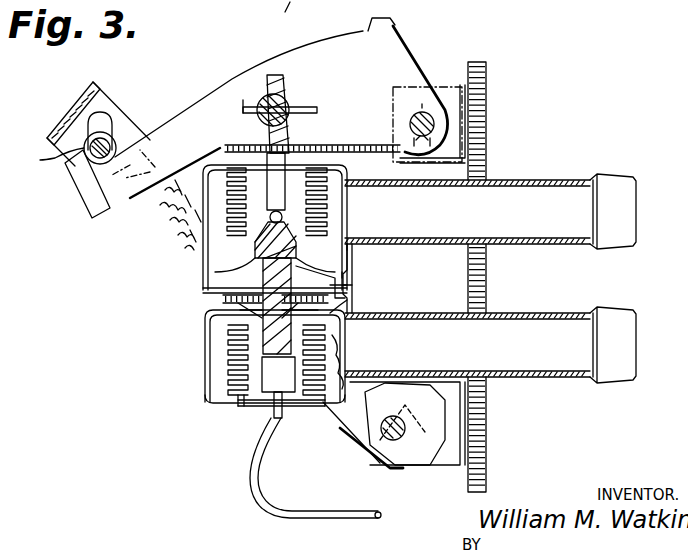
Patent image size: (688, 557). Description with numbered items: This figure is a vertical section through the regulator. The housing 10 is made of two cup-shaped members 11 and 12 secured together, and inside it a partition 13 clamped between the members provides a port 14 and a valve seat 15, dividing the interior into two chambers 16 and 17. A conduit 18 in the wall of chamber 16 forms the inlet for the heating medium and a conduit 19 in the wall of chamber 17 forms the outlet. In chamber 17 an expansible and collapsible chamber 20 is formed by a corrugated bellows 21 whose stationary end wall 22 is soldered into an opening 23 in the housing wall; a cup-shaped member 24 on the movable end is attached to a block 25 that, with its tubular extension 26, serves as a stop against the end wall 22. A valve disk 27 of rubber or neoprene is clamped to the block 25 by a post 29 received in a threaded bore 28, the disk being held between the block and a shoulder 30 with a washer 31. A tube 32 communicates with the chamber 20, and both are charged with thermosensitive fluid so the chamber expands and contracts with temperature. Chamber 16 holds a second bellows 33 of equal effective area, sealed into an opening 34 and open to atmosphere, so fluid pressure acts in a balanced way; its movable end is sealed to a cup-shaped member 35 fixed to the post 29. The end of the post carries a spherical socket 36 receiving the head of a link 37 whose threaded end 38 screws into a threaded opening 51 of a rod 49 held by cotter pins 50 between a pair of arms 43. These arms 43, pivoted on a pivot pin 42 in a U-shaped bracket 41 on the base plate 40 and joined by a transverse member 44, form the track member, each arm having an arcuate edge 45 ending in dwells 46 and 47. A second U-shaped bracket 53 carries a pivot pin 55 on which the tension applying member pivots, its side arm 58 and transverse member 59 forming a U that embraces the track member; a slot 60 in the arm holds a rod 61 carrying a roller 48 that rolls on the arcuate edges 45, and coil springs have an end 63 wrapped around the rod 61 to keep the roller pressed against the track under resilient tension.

The housing 10 is at (355, 282).
The cup-shaped member 11 is at (205, 288).
The cup-shaped member 12 is at (228, 358).
The partition 13 is at (212, 305).
The port 14 is at (312, 282).
The valve seat 15 is at (355, 297).
The chamber 16 is at (335, 208).
The chamber 17 is at (335, 365).
The conduit 18 is at (530, 180).
The conduit 19 is at (533, 377).
The expansible and collapsible chamber 20 is at (300, 406).
The bellows 21 is at (232, 406).
The stationary end wall 22 is at (275, 412).
The opening 23 is at (335, 440).
The cup-shaped member 24 is at (240, 312).
The block 25 is at (350, 322).
The tubular extension 26 is at (212, 393).
The valve disk 27 is at (233, 305).
The threaded bore 28 is at (278, 374).
The post 29 is at (262, 292).
The shoulder 30 is at (277, 306).
The washer 31 is at (345, 280).
The tube 32 is at (268, 508).
The bellows 33 is at (345, 228).
The opening 34 is at (325, 148).
The cup-shaped member 35 is at (195, 235).
The spherical socket 36 is at (275, 249).
The link 37 is at (285, 170).
The threaded end 38 is at (287, 95).
The base plate 40 is at (486, 285).
The U-shaped bracket 41 is at (438, 88).
The pivot pin 42 is at (432, 118).
The arm 43 is at (200, 98).
The transverse member 44 is at (372, 145).
The arcuate edge 45 is at (290, 58).
The dwell 46 is at (85, 185).
The dwell 47 is at (396, 24).
The roller 48 is at (110, 140).
The rod 49 is at (289, 112).
The cotter pin 50 is at (246, 108).
The threaded opening 51 is at (250, 115).
The U-shaped bracket 53 is at (447, 465).
The pivot pin 55 is at (398, 440).
The side arm 58 is at (140, 225).
The transverse member 59 is at (60, 112).
The slot 60 is at (103, 112).
The rod 61 is at (48, 158).
The spring end 63 is at (155, 165).